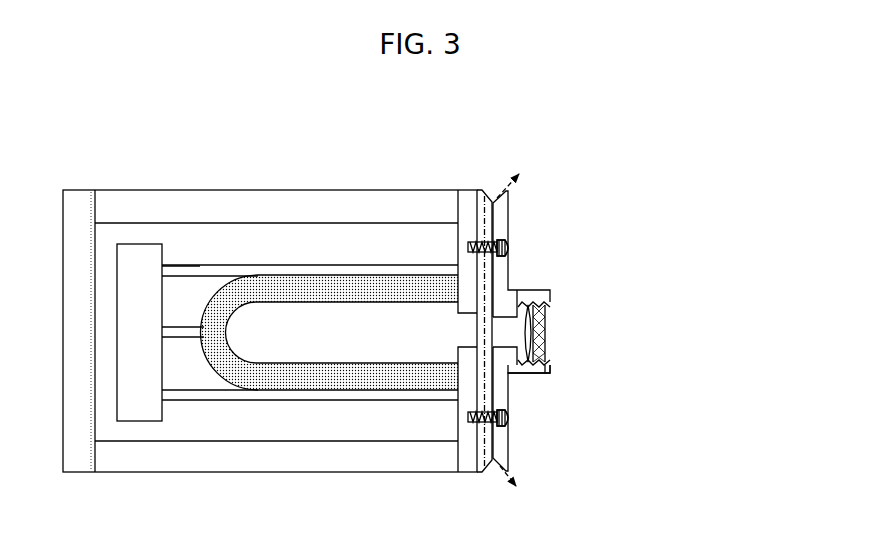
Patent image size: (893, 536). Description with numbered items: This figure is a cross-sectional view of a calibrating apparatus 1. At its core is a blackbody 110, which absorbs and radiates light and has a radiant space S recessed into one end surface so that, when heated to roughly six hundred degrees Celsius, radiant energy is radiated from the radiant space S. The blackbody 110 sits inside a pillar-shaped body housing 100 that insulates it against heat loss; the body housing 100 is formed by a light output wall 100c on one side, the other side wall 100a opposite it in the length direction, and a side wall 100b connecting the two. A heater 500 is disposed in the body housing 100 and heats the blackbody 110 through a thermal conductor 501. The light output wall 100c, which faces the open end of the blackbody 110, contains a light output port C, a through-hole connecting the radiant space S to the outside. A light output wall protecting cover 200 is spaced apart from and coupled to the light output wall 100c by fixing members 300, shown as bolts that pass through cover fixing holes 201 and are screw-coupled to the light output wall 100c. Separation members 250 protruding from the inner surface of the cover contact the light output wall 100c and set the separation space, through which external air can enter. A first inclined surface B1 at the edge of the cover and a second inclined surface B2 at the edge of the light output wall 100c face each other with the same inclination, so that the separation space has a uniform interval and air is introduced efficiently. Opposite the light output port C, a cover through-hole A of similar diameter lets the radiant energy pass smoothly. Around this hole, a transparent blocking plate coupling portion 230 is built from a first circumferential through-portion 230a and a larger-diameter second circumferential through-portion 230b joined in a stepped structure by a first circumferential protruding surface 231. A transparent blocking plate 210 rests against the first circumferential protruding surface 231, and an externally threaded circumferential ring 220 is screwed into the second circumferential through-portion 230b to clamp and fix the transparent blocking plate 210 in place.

The calibrating apparatus 1 is at (550, 104).
The body housing 100 is at (276, 287).
The other side wall 100a is at (84, 190).
The side wall 100b is at (267, 190).
The light output wall 100c is at (469, 306).
The blackbody 110 is at (308, 380).
The light output wall protecting cover 200 is at (510, 208).
The cover fixing holes 201 is at (500, 234).
The transparent blocking plate 210 is at (553, 308).
The circumferential ring 220 is at (547, 345).
The transparent blocking plate coupling portion 230 is at (563, 414).
The first circumferential through-portion 230a is at (515, 375).
The second circumferential through-portion 230b is at (544, 378).
The first circumferential protruding surface 231 is at (548, 370).
The separation members 250 is at (493, 262).
The fixing members 300 is at (510, 250).
The heater 500 is at (140, 421).
The thermal conductor 501 is at (198, 400).
The cover through-hole A is at (573, 336).
The first inclined surface B1 is at (513, 203).
The second inclined surface B2 is at (485, 191).
The light output port C is at (468, 325).
The radiant space S is at (482, 338).